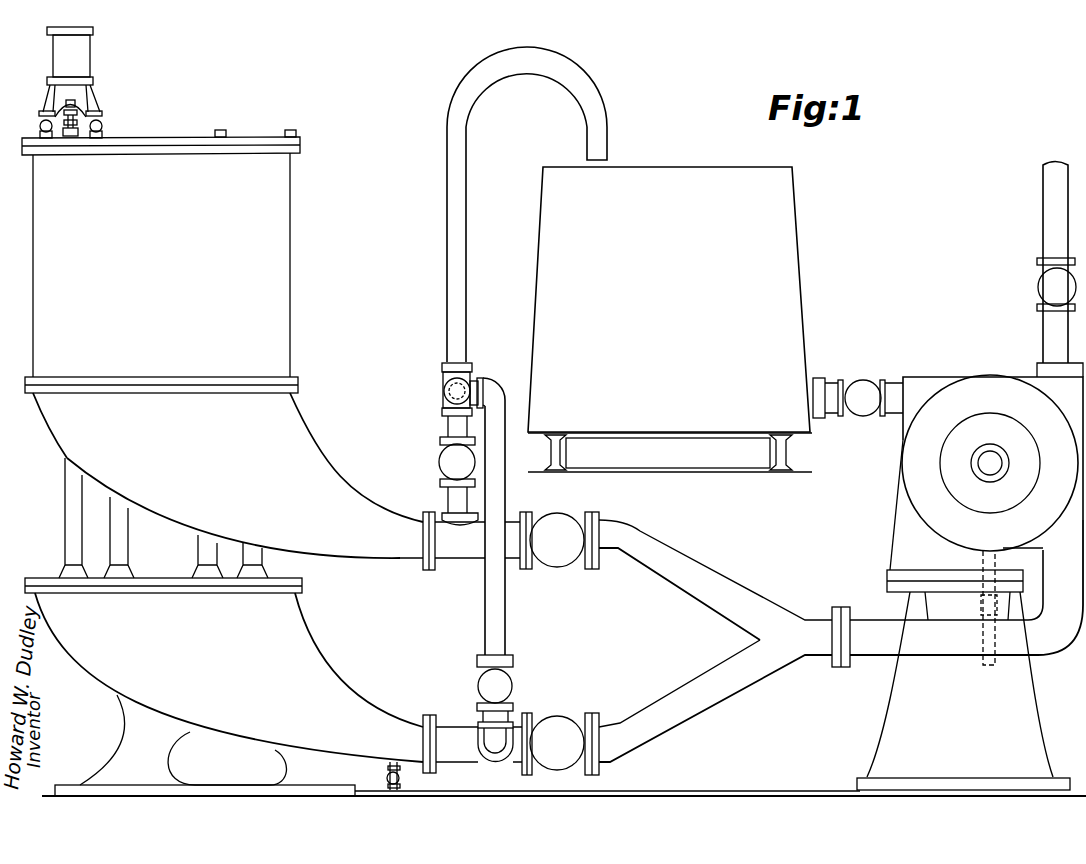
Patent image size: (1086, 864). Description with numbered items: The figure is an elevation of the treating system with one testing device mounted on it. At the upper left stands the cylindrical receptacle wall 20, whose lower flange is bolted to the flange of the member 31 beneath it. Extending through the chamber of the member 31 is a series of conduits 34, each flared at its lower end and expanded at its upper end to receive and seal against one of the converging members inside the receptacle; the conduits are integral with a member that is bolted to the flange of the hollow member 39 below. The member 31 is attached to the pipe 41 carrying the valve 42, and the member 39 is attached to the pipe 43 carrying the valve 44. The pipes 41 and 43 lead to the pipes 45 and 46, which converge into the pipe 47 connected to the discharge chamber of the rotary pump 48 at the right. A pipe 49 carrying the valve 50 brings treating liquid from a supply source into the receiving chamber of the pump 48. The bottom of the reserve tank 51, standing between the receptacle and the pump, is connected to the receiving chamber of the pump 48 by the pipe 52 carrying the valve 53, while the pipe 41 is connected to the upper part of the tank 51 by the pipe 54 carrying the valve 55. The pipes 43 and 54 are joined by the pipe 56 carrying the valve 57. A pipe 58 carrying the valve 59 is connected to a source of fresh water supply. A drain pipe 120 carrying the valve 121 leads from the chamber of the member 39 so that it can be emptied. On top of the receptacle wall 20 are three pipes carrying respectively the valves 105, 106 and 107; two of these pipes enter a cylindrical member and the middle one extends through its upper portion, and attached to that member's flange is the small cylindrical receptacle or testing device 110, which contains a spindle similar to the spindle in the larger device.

The cylindrical receptacle wall 20 is at (290, 271).
The cylindrical receptacle or testing device 110 is at (84, 54).
The valve 105 is at (40, 128).
The valve 106 is at (66, 134).
The valve 107 is at (102, 128).
The member 31 is at (305, 452).
The conduits 34 is at (250, 553).
The hollow member 39 is at (312, 674).
The pipe 41 is at (469, 553).
The valve 42 is at (562, 566).
The pipe 43 is at (450, 727).
The valve 44 is at (567, 715).
The pipe 45 is at (704, 575).
The pipe 46 is at (692, 680).
The pipe 47 is at (868, 603).
The rotary pump 48 is at (970, 576).
The pipe 49 is at (1052, 221).
The valve 50 is at (1047, 288).
The reserve tank 51 is at (670, 319).
The pipe 52 is at (896, 383).
The valve 53 is at (864, 385).
The pipe 54 is at (462, 286).
The valve 55 is at (446, 462).
The pipe 56 is at (497, 497).
The valve 57 is at (508, 684).
The pipe 58 is at (983, 562).
The valve 59 is at (980, 606).
The drain pipe 120 is at (402, 786).
The valve 121 is at (388, 763).